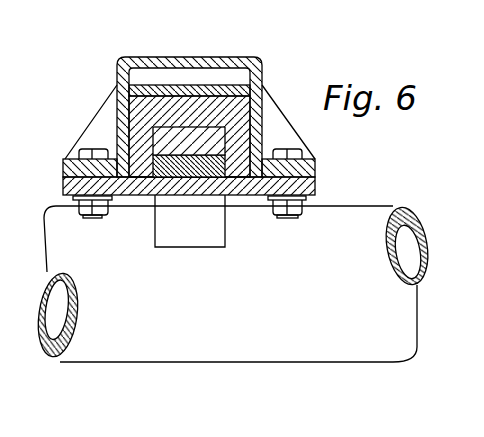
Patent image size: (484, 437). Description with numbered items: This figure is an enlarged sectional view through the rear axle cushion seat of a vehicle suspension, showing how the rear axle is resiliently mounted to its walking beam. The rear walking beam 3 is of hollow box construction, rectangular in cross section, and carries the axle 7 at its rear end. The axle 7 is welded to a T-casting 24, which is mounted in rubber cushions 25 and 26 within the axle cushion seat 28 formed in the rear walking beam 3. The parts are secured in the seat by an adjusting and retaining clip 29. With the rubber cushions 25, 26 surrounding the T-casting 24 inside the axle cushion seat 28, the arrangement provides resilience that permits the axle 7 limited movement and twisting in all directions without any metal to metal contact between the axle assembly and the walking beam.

The rear walking beam 3 is at (226, 57).
The axle 7 is at (390, 209).
The T-casting 24 is at (130, 121).
The rubber cushion 25 is at (150, 96).
The rubber cushion 26 is at (153, 157).
The axle cushion seat 28 is at (265, 132).
The adjusting and retaining clip 29 is at (315, 188).